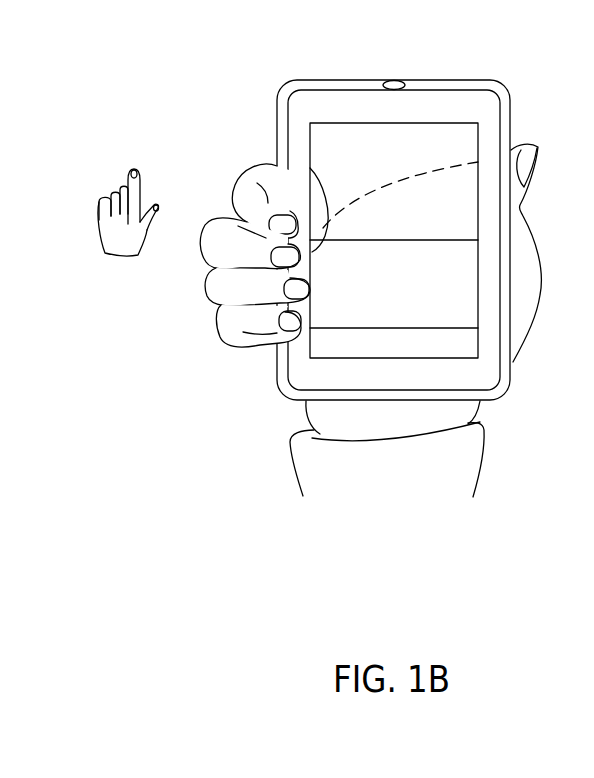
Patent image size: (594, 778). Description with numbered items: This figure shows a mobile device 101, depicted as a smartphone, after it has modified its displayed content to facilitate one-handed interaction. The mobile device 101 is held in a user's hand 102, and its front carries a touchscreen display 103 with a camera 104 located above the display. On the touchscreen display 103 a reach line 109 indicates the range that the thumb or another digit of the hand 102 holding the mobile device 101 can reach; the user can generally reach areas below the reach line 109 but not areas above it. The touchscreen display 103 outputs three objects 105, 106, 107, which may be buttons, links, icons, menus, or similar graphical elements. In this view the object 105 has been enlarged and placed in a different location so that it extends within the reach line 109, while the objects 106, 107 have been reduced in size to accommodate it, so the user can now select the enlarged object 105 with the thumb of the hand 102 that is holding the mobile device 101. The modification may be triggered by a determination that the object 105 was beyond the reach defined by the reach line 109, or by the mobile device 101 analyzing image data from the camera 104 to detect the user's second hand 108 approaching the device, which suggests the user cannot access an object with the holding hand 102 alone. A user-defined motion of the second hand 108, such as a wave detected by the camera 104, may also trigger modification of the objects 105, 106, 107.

The mobile device 101 is at (283, 84).
The user's hand 102 is at (532, 253).
The touchscreen display 103 is at (322, 345).
The camera 104 is at (394, 82).
The object 105 is at (453, 156).
The object 106 is at (453, 280).
The object 107 is at (453, 356).
The second hand 108 is at (133, 168).
The reach line 109 is at (310, 168).